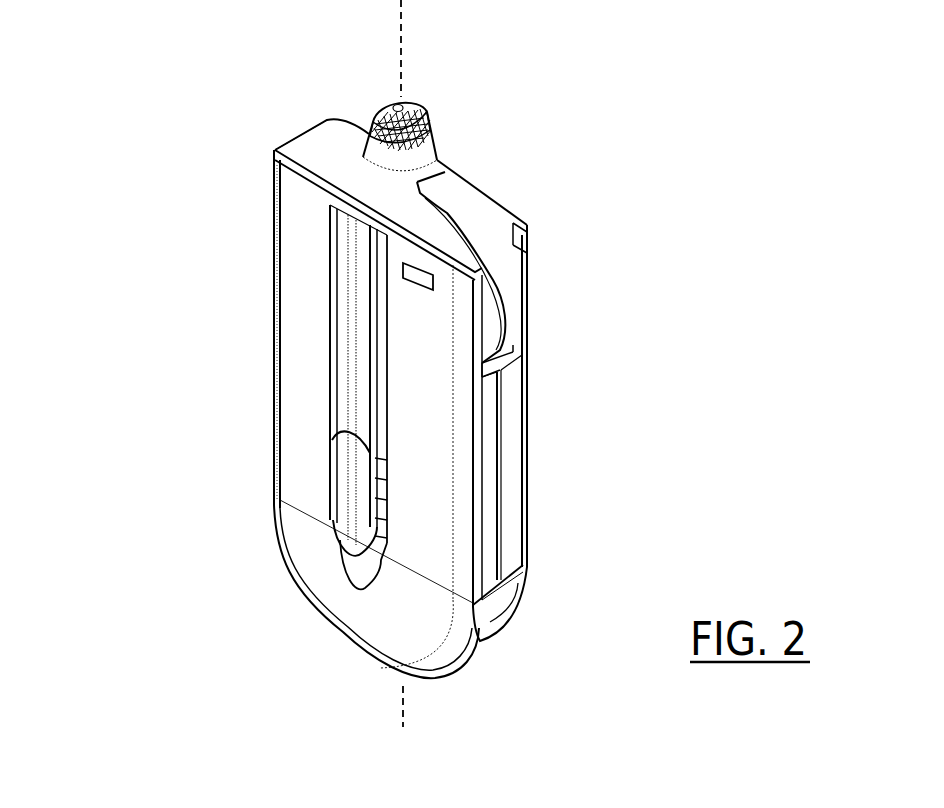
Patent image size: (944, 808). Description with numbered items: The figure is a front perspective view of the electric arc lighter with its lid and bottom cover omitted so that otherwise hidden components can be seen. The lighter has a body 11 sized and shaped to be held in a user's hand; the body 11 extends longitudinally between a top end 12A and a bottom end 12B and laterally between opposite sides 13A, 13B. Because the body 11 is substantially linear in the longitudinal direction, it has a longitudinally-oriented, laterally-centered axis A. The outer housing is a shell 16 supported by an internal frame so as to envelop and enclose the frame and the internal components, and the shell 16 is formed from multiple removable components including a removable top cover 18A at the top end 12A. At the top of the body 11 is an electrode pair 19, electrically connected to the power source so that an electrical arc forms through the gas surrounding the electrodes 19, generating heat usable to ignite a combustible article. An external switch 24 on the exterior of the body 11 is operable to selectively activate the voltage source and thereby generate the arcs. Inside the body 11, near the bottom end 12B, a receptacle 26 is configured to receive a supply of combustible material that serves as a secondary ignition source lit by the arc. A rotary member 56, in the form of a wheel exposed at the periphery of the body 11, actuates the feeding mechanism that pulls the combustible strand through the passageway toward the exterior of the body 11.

The axis A is at (402, 45).
The body 11 is at (270, 316).
The top end 12A is at (339, 130).
The bottom end 12B is at (349, 660).
The side 13A is at (272, 421).
The side 13B is at (500, 474).
The shell 16 is at (500, 538).
The top cover 18A is at (335, 158).
The electrode pair 19 is at (437, 115).
The external switch 24 is at (338, 523).
The receptacle 26 is at (486, 655).
The rotary member 56 is at (510, 280).